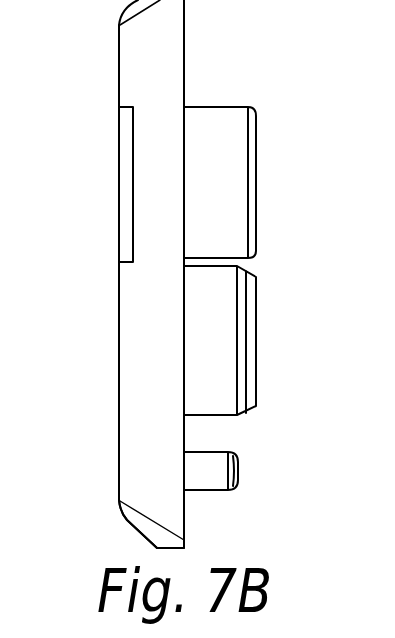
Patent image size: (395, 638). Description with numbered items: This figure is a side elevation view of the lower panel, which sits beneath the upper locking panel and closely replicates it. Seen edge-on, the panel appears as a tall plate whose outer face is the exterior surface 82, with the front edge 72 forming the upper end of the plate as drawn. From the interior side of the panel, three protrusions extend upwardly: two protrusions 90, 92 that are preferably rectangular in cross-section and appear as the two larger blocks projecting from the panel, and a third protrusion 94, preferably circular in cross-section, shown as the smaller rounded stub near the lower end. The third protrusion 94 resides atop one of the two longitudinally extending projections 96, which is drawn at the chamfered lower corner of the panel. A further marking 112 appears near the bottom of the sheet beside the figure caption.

The front edge 72 is at (119, 80).
The exterior surface 82 is at (165, 407).
The protrusion 90 is at (237, 168).
The protrusion 92 is at (117, 184).
The third protrusion 94 is at (213, 487).
The longitudinally extending projection 96 is at (117, 488).
The sheet marker 112 is at (369, 628).